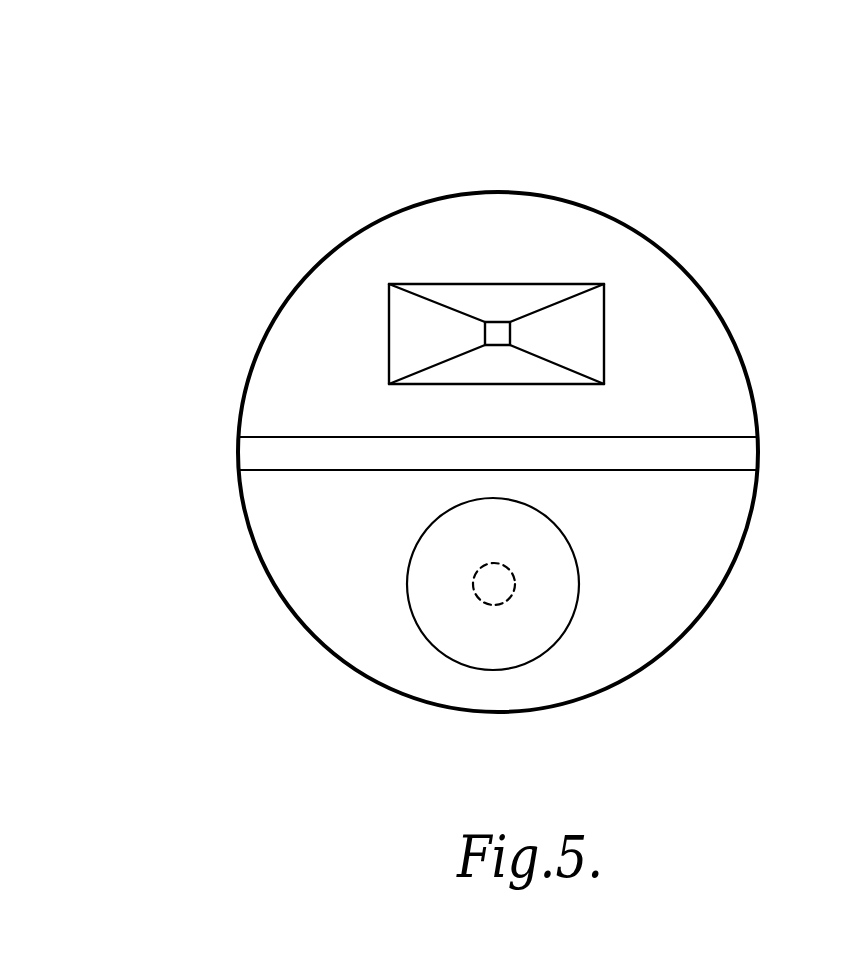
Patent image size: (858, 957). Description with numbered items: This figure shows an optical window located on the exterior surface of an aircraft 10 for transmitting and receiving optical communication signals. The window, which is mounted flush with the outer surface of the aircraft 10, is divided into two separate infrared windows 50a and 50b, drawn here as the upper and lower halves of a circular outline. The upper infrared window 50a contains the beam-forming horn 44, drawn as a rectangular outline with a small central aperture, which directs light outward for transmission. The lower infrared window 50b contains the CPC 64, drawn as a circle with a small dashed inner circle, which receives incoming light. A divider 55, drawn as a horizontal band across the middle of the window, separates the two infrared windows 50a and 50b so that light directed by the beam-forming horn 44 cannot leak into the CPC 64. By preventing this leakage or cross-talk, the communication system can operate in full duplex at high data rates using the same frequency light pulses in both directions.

The aircraft 10 is at (189, 201).
The beam-forming horn 44 is at (472, 282).
The infrared window 50a is at (670, 312).
The infrared window 50b is at (668, 595).
The divider 55 is at (250, 453).
The CPC 64 is at (410, 585).